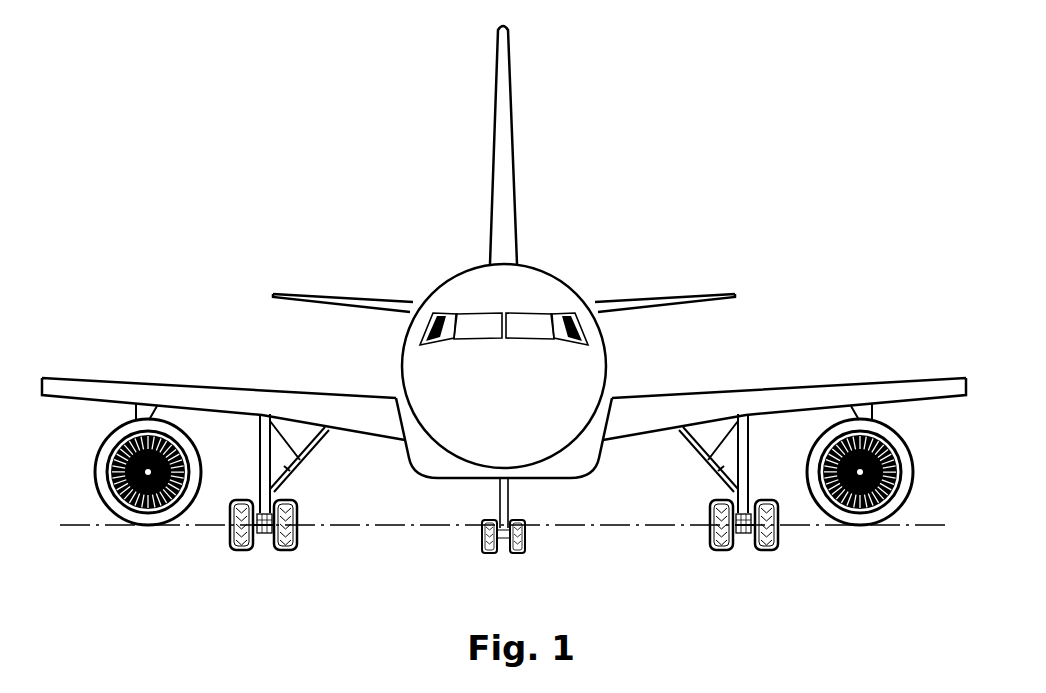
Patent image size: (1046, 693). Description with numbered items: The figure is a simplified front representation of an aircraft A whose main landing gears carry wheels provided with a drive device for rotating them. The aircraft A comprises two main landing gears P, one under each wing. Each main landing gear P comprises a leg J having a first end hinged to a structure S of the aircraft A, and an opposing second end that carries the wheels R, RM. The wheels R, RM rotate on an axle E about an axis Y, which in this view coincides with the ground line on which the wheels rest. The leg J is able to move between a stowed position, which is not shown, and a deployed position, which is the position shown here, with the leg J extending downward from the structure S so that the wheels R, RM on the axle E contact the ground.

The aircraft A is at (641, 127).
The structure S is at (196, 391).
The leg J is at (260, 447).
The wheel R is at (231, 546).
The wheel RM is at (292, 546).
The axle E is at (263, 533).
The main landing gear P is at (166, 560).
The axis Y is at (922, 528).